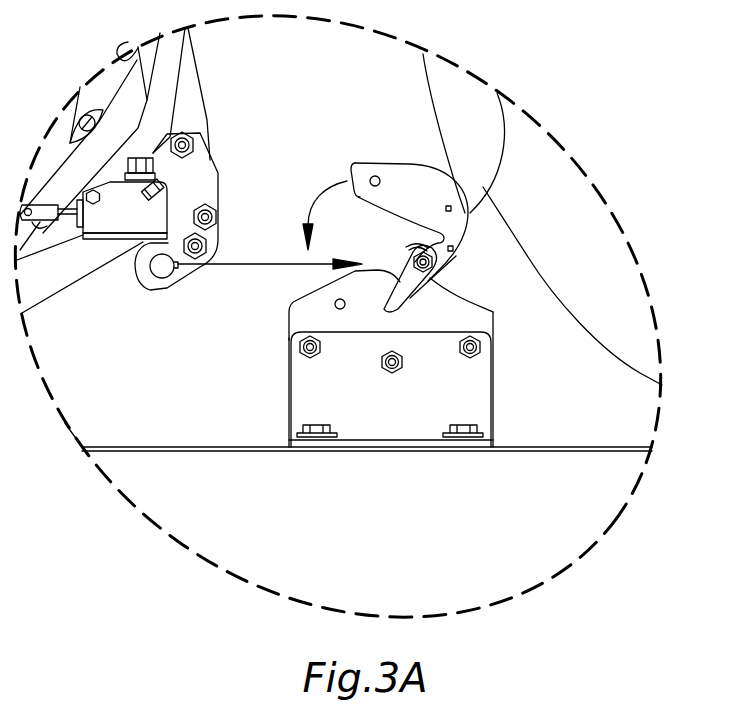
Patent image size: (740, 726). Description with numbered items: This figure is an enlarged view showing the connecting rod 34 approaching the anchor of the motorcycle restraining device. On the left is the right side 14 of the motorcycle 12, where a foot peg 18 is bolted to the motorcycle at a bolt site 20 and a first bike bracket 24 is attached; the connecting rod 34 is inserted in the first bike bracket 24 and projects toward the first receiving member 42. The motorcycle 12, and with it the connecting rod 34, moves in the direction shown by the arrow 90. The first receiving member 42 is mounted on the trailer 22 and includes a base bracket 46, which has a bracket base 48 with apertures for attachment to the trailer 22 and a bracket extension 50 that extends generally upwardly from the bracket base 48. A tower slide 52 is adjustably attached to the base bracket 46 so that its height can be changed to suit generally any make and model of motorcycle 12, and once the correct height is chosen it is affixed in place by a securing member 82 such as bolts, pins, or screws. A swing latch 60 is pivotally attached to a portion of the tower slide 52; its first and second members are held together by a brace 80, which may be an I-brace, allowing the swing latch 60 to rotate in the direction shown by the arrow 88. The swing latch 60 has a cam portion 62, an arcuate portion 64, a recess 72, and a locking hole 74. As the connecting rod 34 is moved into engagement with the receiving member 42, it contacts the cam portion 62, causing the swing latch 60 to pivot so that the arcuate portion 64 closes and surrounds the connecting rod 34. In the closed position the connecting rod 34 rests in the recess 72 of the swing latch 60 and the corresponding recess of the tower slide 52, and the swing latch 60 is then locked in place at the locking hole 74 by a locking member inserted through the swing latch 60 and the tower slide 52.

The motorcycle 12 is at (327, 50).
The right side 14 is at (372, 53).
The foot peg 18 is at (188, 82).
The bolt site 20 is at (197, 142).
The trailer 22 is at (167, 449).
The first bike bracket 24 is at (200, 193).
The connecting rod 34 is at (156, 277).
The first receiving member 42 is at (384, 378).
The base bracket 46 is at (494, 395).
The bracket base 48 is at (393, 442).
The bracket extension 50 is at (310, 380).
The tower slide 52 is at (460, 280).
The swing latch 60 is at (468, 217).
The cam portion 62 is at (395, 272).
The arcuate portion 64 is at (427, 170).
The recess 72 is at (432, 230).
The locking hole 74 is at (373, 177).
The brace 80 is at (490, 313).
The securing member 82 is at (481, 346).
The arrow 88 is at (340, 181).
The arrow 90 is at (258, 270).